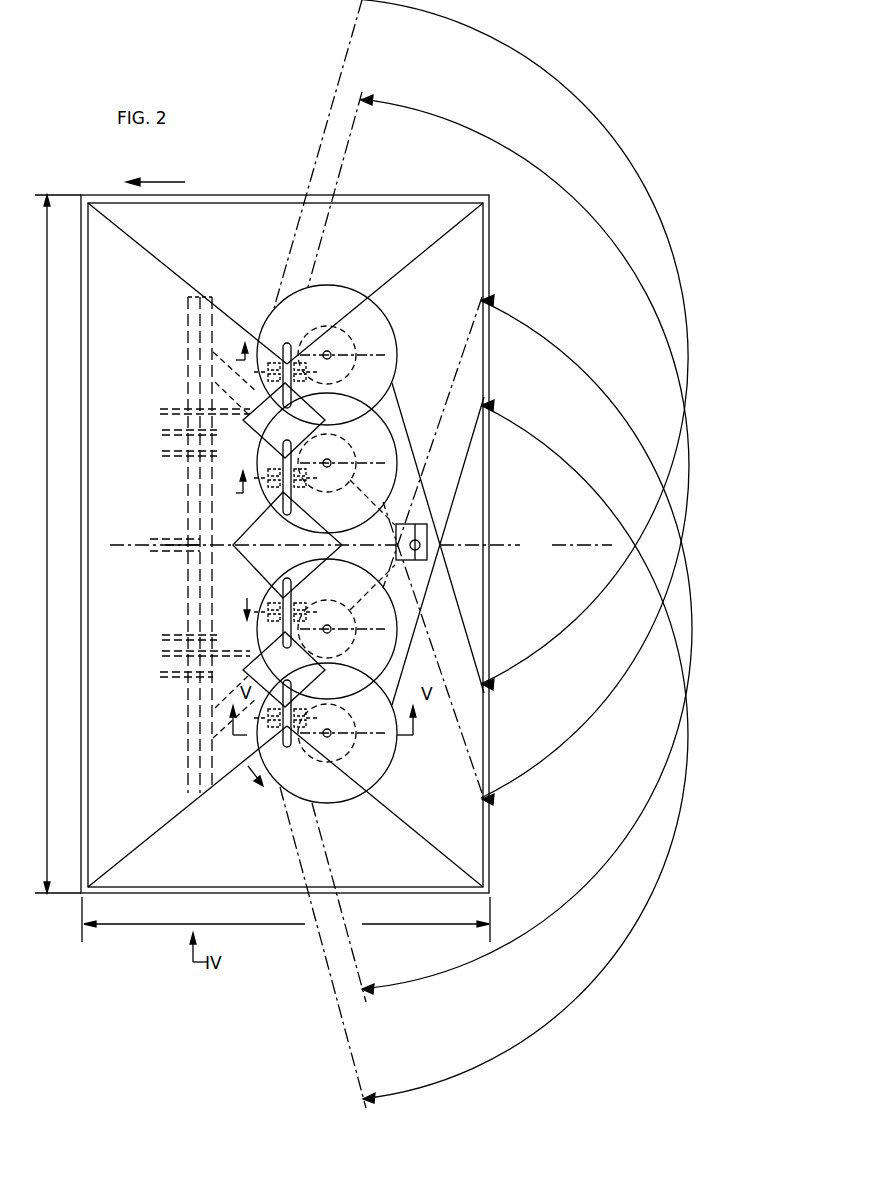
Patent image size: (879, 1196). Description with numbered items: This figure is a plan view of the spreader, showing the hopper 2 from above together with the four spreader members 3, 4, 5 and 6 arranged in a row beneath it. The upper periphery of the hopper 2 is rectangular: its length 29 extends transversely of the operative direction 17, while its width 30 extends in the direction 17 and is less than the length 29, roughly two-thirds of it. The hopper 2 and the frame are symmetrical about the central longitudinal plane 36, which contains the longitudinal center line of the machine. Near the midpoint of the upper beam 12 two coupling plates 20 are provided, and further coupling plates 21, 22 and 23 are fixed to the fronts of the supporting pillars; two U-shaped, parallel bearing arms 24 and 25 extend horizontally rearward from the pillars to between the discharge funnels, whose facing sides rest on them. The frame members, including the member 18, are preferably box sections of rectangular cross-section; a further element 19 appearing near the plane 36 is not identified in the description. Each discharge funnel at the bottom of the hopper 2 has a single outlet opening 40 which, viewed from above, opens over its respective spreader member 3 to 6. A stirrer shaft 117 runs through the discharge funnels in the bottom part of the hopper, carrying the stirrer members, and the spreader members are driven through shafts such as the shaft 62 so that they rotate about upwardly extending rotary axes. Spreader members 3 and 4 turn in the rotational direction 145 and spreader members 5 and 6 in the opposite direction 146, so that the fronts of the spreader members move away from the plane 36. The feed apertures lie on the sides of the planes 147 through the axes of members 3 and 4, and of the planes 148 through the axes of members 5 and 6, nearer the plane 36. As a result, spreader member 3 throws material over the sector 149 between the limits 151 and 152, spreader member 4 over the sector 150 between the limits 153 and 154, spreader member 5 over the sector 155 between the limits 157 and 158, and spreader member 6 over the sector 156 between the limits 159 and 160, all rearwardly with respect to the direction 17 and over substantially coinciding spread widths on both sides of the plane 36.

The hopper 2 is at (285, 533).
The spreader member 3 is at (392, 331).
The spreader member 4 is at (398, 414).
The spreader member 5 is at (334, 629).
The spreader member 6 is at (386, 784).
The upper beam 12 is at (179, 545).
The direction 17 is at (158, 169).
The frame member 18 is at (396, 545).
The sensor 19 is at (436, 521).
The coupling plates 20 is at (162, 532).
The coupling plate 21 is at (181, 544).
The coupling plate 22 is at (162, 432).
The coupling plate 23 is at (165, 545).
The bearing arm 24 is at (232, 432).
The bearing arm 25 is at (238, 652).
The length 29 is at (49, 544).
The width 30 is at (286, 927).
The central plane 36 is at (361, 530).
The outlet opening 40 is at (310, 545).
The shaft 62 is at (328, 345).
The stirrer shaft 117 is at (284, 533).
The rotational direction 145 is at (234, 420).
The rotational direction 146 is at (240, 693).
The planes 147 is at (344, 409).
The planes 148 is at (341, 682).
The sector 149 is at (545, 58).
The sector 150 is at (528, 161).
The limit 151 is at (318, 154).
The limit 152 is at (466, 538).
The limit 153 is at (348, 156).
The limit 154 is at (463, 647).
The sector 155 is at (545, 924).
The sector 156 is at (560, 1018).
The limit 157 is at (358, 956).
The limit 158 is at (432, 442).
The limit 159 is at (350, 1042).
The limit 160 is at (464, 551).